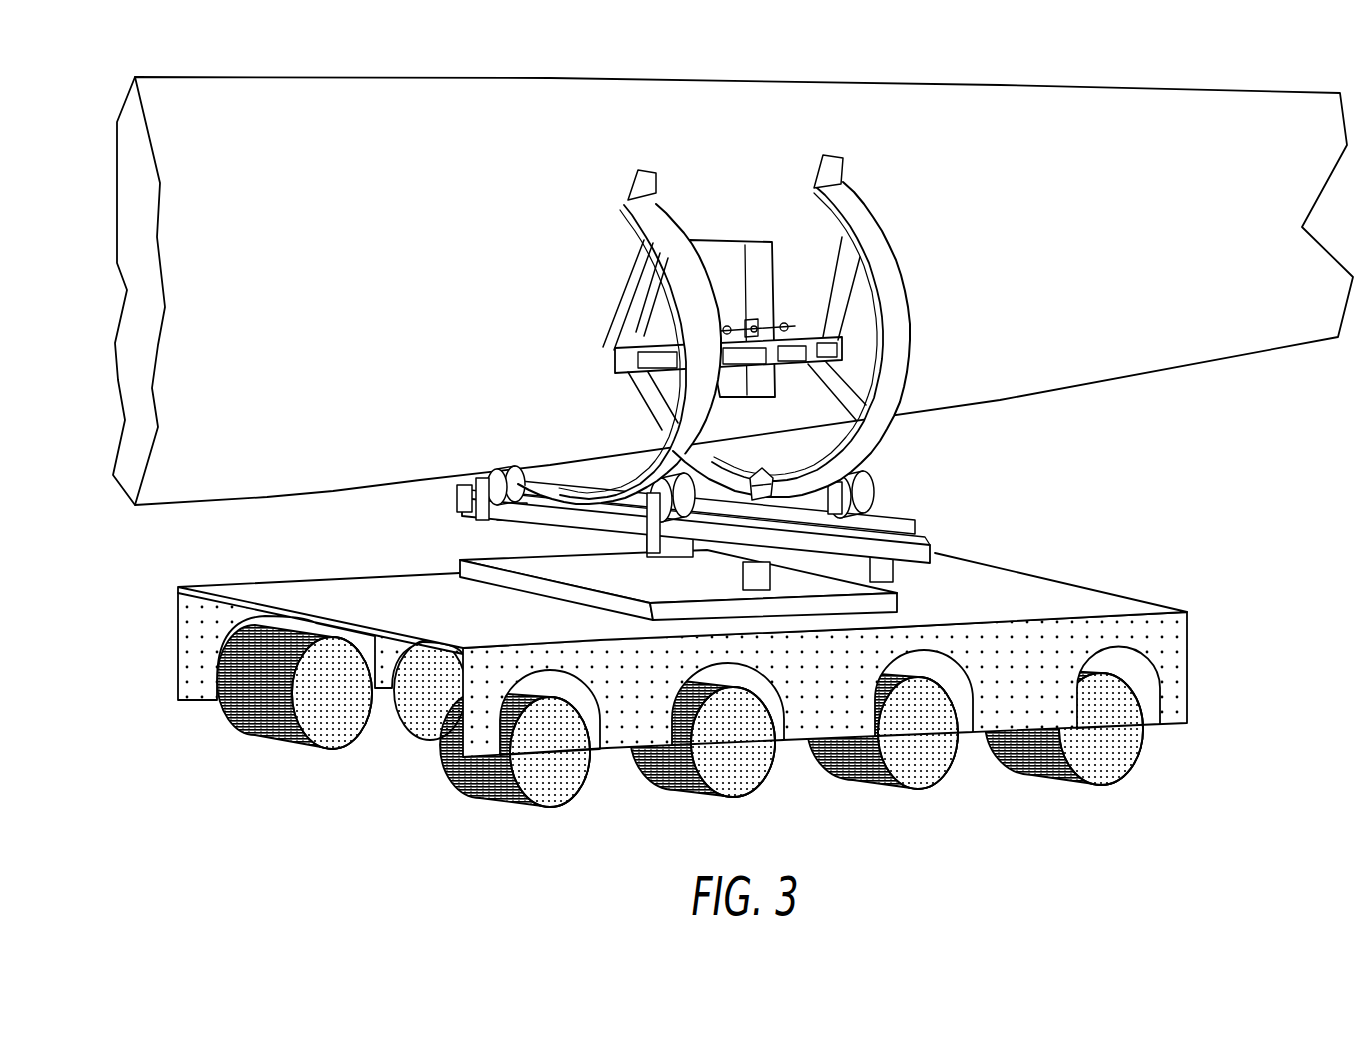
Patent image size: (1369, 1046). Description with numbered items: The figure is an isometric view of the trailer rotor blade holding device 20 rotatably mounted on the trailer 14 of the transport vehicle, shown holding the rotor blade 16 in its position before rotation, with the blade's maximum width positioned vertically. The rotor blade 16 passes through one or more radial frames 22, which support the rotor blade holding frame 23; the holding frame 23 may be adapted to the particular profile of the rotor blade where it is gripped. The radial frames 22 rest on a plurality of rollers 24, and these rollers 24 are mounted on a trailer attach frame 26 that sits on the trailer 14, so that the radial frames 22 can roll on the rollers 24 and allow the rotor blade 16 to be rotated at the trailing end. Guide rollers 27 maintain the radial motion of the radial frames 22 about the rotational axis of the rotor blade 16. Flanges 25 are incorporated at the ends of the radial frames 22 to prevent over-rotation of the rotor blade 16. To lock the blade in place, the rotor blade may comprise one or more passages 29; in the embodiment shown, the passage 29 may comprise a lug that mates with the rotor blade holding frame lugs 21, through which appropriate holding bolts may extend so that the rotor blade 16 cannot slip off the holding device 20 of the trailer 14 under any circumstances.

The trailer 14 is at (1165, 665).
The rotor blade 16 is at (1272, 327).
The trailer rotor blade holding device 20 is at (1067, 460).
The rotor blade holding frame lugs 21 is at (792, 322).
The radial frames 22 is at (668, 228).
The rotor blade holding frame 23 is at (713, 270).
The rollers 24 is at (630, 442).
The flanges 25 is at (640, 183).
The trailer attach frame 26 is at (933, 552).
The guide rollers 27 is at (763, 470).
The passages 29 is at (762, 292).